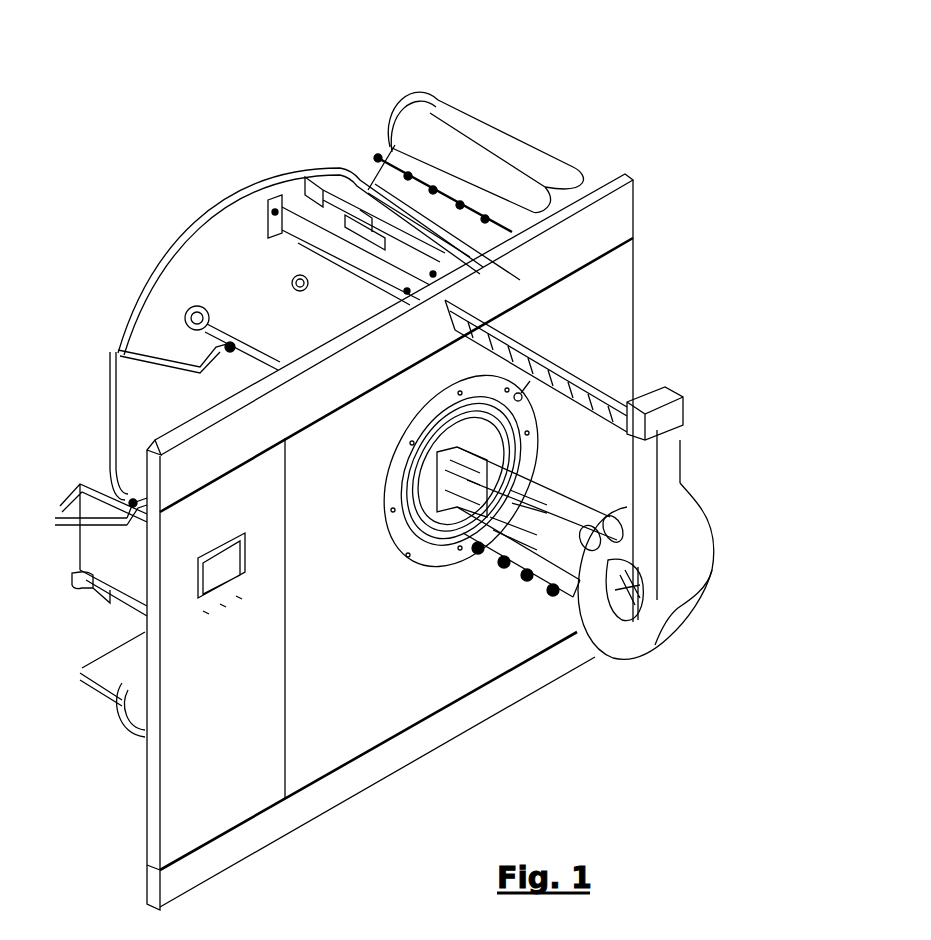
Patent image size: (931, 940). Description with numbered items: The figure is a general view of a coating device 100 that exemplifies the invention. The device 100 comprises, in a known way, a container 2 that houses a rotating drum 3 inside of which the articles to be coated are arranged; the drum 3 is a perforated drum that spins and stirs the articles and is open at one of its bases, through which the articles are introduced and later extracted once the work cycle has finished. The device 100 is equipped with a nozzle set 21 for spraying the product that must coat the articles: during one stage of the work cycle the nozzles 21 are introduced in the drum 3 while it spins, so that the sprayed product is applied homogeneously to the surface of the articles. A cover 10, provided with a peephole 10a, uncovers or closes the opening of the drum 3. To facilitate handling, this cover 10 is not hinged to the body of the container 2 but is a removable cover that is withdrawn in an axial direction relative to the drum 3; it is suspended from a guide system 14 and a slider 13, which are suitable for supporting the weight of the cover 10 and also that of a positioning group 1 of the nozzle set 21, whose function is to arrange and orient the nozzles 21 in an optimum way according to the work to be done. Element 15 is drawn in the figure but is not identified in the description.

The device 100 is at (178, 243).
The container 2 is at (180, 290).
The guide system 14 is at (333, 198).
The roll 15 is at (527, 148).
The slider 13 is at (563, 337).
The rotating drum 3 is at (520, 396).
The positioning group 1 is at (567, 490).
The nozzle set 21 is at (557, 595).
The cover 10 is at (622, 638).
The peephole 10a is at (622, 608).